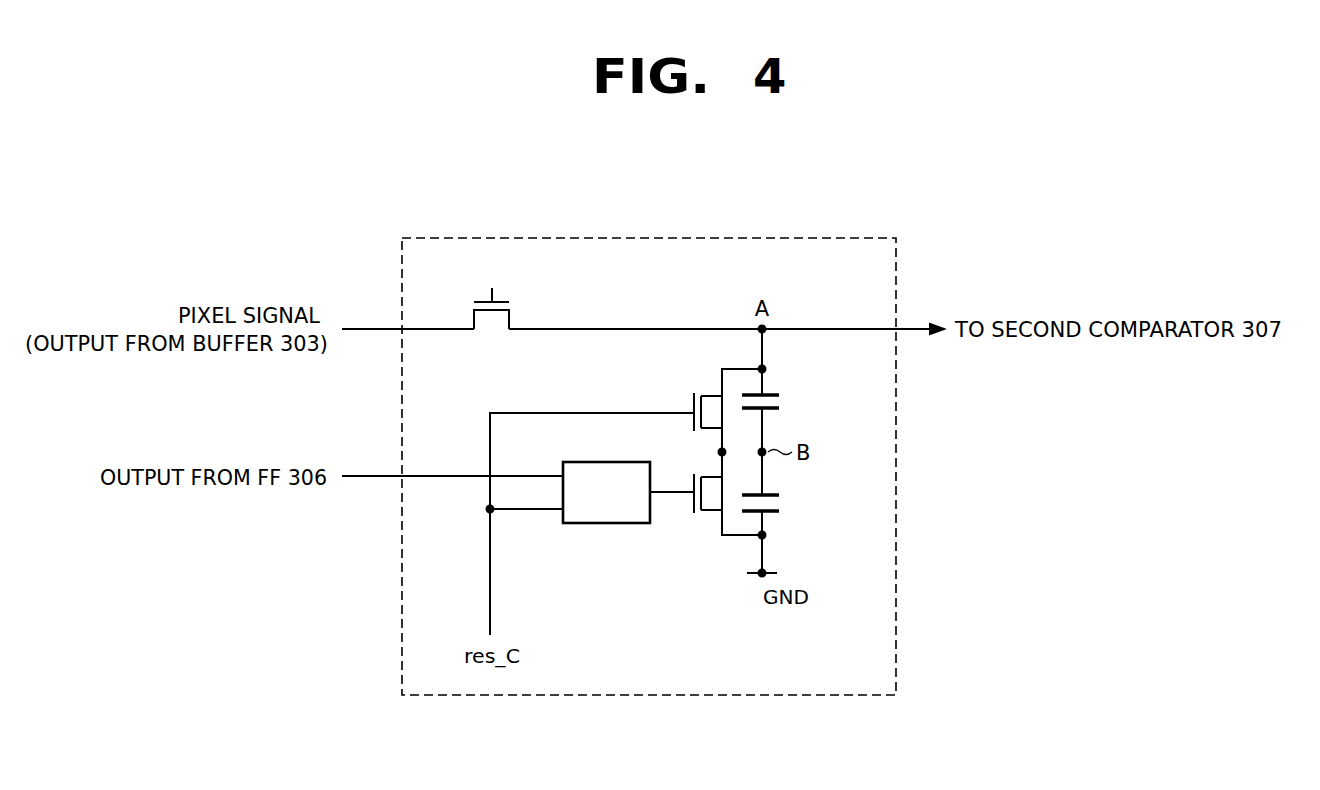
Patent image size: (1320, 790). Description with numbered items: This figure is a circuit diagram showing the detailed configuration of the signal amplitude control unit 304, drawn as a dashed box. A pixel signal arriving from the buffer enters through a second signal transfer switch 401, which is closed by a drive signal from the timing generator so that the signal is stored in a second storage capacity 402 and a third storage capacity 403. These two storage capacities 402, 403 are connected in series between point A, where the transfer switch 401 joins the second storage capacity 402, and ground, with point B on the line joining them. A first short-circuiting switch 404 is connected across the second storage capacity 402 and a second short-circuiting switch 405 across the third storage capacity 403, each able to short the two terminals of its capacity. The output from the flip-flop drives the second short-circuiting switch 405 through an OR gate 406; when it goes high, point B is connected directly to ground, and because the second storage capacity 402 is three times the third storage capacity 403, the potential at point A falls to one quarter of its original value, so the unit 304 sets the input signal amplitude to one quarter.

The signal amplitude control unit 304 is at (857, 238).
The second signal transfer switch 401 is at (490, 334).
The second storage capacity 402 is at (800, 415).
The third storage capacity 403 is at (802, 522).
The first short-circuiting switch 404 is at (712, 380).
The second short-circuiting switch 405 is at (712, 522).
The OR gate 406 is at (612, 525).